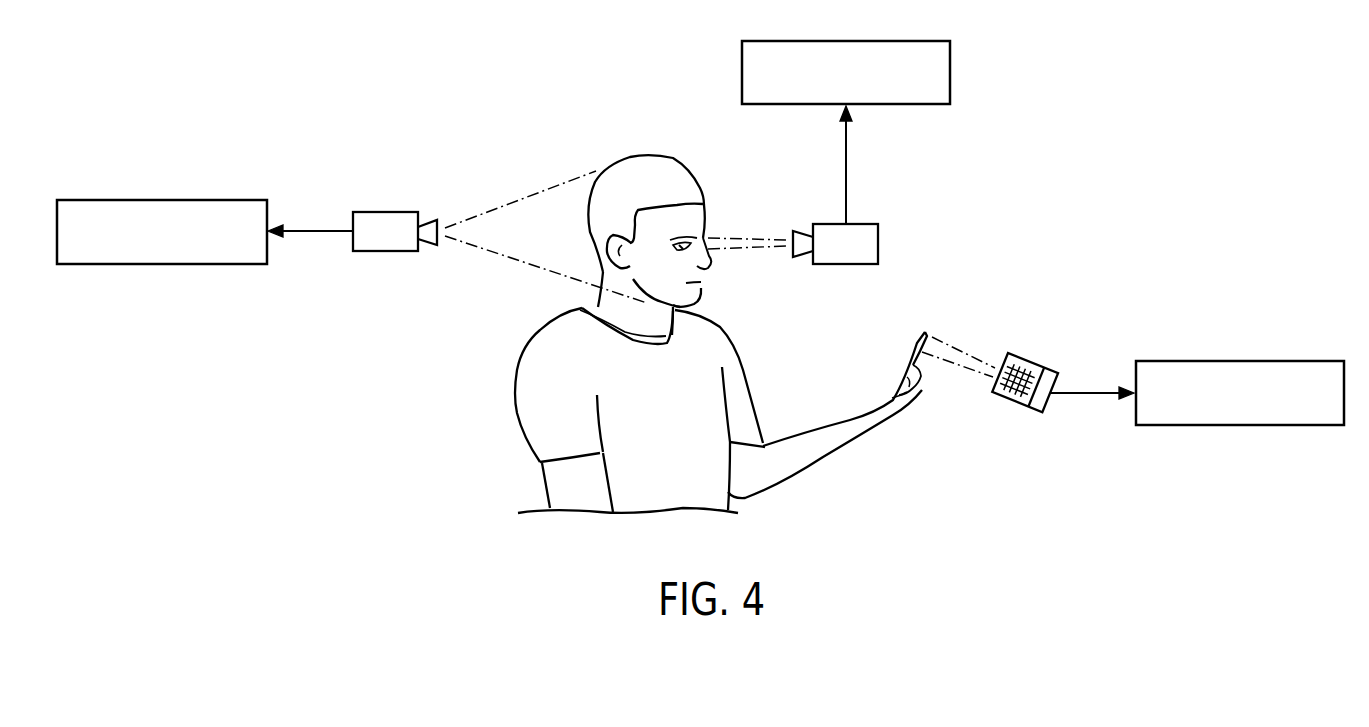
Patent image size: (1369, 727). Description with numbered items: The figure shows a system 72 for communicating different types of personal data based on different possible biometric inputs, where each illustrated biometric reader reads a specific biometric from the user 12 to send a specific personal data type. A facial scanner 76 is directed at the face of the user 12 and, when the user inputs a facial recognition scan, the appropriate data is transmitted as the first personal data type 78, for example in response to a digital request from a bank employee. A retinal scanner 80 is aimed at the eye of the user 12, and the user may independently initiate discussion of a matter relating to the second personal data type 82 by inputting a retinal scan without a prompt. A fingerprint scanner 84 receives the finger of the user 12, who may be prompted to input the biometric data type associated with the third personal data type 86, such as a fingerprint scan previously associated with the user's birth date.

The system 72 is at (383, 70).
The user 12 is at (657, 167).
The facial scanner 76 is at (385, 212).
The first personal data type 78 is at (163, 200).
The retinal scanner 80 is at (880, 245).
The second personal data type 82 is at (846, 40).
The fingerprint scanner 84 is at (1035, 367).
The third personal data type 86 is at (1240, 360).